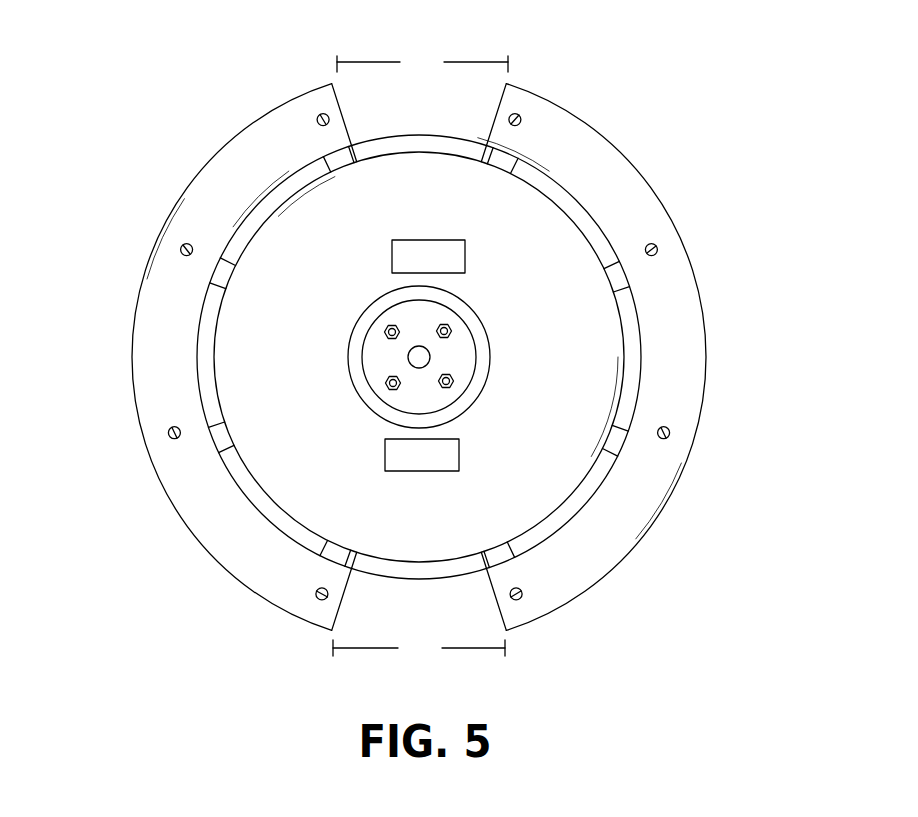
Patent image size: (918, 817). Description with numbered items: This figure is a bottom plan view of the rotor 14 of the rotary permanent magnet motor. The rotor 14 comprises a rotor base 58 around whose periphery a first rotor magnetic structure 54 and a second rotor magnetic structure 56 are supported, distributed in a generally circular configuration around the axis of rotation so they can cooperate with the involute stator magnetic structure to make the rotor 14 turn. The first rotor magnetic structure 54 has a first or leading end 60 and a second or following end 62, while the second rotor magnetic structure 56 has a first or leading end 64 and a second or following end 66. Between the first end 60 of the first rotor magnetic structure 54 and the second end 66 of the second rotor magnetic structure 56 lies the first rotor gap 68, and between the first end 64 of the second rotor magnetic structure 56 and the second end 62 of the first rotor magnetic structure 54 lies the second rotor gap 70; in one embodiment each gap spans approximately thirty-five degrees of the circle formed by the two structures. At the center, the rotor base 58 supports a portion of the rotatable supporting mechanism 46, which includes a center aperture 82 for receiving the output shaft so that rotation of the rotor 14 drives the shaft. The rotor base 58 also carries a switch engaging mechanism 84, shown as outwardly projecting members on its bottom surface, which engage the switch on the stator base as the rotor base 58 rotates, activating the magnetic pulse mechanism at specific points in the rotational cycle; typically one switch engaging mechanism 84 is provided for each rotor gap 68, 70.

The rotor 14 is at (695, 93).
The rotatable supporting mechanism 46 is at (484, 344).
The first rotor magnetic structure 54 is at (225, 170).
The second rotor magnetic structure 56 is at (688, 395).
The rotor base 58 is at (273, 425).
The first or leading end of first rotor magnetic structure 60 is at (320, 627).
The second or following end of first rotor magnetic structure 62 is at (321, 81).
The first or leading end of second rotor magnetic structure 64 is at (517, 81).
The second or following end of second rotor magnetic structure 66 is at (514, 628).
The first rotor gap 68 is at (419, 648).
The second rotor gap 70 is at (422, 62).
The center aperture 82 is at (412, 355).
The switch engaging mechanism 84 is at (435, 460).